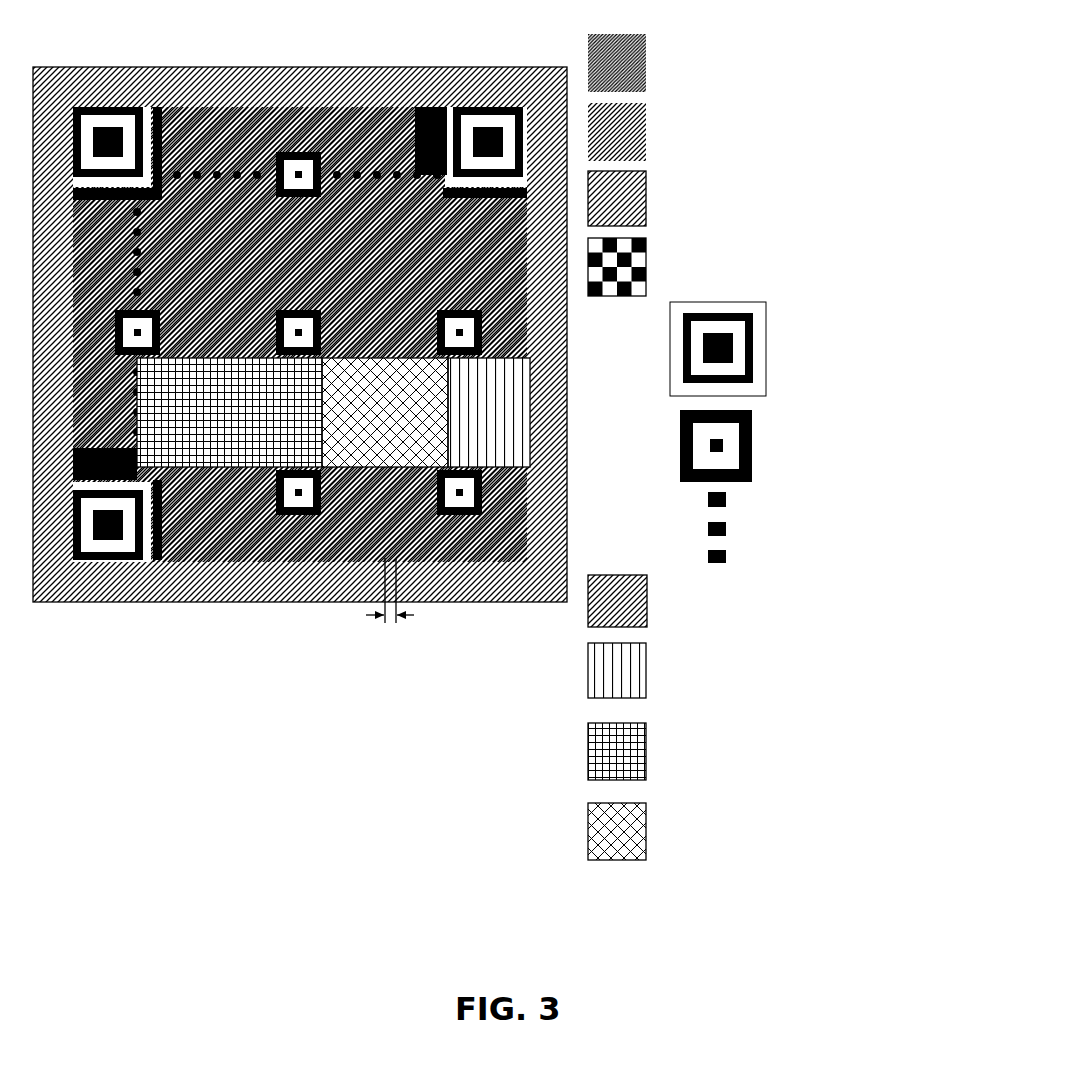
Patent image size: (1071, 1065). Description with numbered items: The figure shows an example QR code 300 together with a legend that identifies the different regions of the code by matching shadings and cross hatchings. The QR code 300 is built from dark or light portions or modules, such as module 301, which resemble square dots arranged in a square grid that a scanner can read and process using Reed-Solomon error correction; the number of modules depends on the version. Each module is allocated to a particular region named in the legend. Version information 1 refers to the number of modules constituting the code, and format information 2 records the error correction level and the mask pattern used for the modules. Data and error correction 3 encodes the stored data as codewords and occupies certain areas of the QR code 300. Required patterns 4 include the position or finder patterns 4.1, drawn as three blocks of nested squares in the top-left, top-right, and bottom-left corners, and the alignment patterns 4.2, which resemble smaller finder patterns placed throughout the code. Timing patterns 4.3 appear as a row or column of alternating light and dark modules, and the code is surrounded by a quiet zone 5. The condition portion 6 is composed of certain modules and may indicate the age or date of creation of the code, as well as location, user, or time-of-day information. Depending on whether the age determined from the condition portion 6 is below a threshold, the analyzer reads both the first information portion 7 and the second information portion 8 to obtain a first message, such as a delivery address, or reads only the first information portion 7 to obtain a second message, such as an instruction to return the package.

The QR code 300 is at (489, 50).
The module 301 is at (387, 558).
The version information 1 is at (711, 63).
The format information 2 is at (710, 132).
The data and error correction 3 is at (734, 198).
The required patterns 4 is at (704, 267).
The position patterns 4.1 is at (773, 349).
The alignment patterns 4.2 is at (788, 446).
The timing patterns 4.3 is at (788, 527).
The quiet zone 5 is at (676, 601).
The condition portion 6 is at (709, 670).
The first information portion 7 is at (738, 751).
The second information portion 8 is at (752, 831).